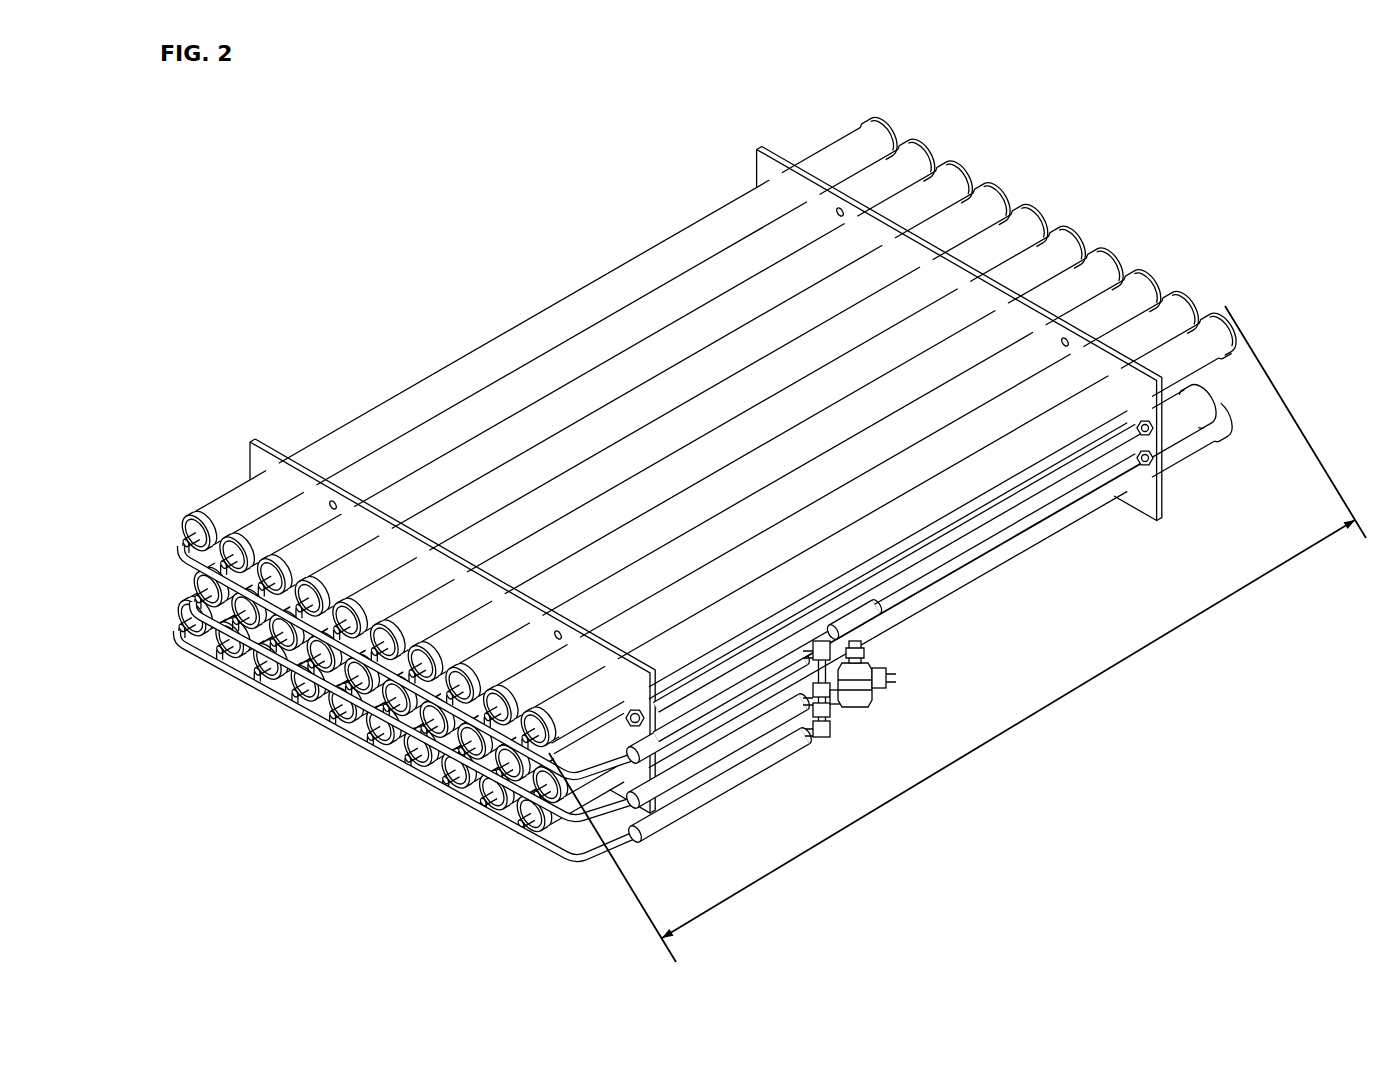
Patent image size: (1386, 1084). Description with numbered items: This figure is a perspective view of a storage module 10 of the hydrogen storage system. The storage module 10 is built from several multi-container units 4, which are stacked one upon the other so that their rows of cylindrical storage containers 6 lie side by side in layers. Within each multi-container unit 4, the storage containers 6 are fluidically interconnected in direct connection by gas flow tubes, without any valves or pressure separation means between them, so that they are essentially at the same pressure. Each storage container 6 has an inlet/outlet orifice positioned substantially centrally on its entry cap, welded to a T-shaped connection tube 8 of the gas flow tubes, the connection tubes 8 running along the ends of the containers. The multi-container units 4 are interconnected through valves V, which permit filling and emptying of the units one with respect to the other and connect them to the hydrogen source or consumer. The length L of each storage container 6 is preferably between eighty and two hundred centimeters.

The storage module 10 is at (525, 163).
The storage container 6 is at (608, 388).
The multi-container unit 4 is at (178, 510).
The T-shaped connection tube 8 is at (556, 862).
The valve V is at (860, 687).
The length of each storage container L is at (957, 634).